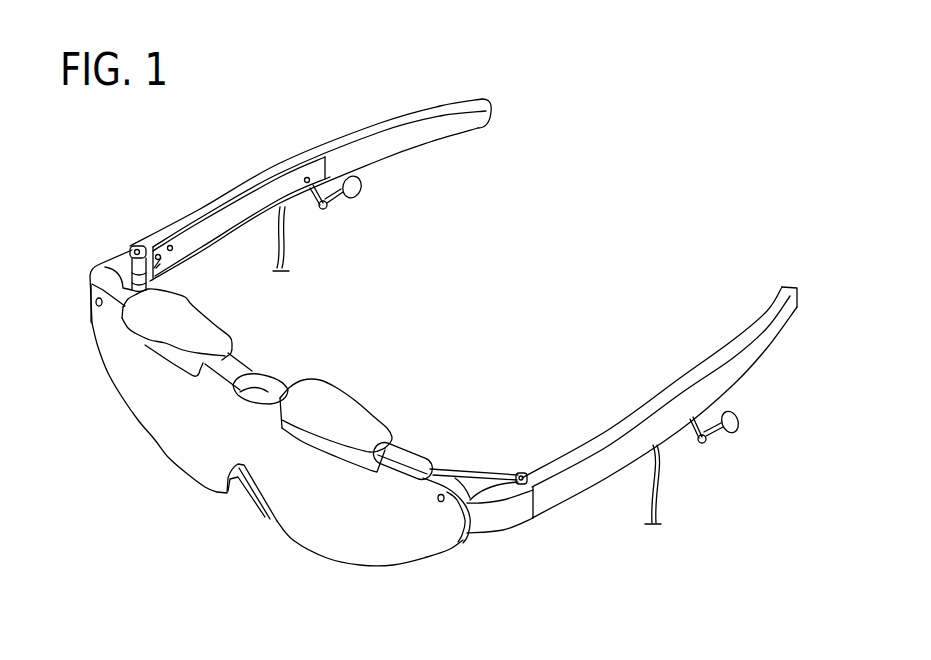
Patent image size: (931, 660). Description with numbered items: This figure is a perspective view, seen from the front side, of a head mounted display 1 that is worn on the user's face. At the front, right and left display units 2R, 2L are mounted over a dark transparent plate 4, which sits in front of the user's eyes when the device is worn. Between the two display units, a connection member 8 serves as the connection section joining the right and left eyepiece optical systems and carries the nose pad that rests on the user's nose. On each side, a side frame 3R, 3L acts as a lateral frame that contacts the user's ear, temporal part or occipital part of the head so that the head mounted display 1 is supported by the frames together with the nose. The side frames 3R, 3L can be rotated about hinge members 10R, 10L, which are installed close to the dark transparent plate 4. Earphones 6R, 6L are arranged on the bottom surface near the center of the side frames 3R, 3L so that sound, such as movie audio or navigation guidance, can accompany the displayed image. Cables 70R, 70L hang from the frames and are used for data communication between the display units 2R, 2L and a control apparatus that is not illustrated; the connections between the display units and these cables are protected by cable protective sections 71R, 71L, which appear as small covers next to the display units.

The head mounted display 1 is at (458, 80).
The side frame 3R is at (297, 152).
The side frame 3L is at (563, 494).
The hinge member 10R is at (118, 268).
The hinge member 10L is at (502, 527).
The cable protective section 71R is at (106, 308).
The cable protective section 71L is at (401, 447).
The display unit 2R is at (187, 318).
The display unit 2L is at (340, 402).
The connection member 8 is at (273, 380).
The dark transparent plate 4 is at (292, 514).
The earphone 6R is at (364, 195).
The earphone 6L is at (740, 427).
The cable 70R is at (290, 241).
The cable 70L is at (660, 486).